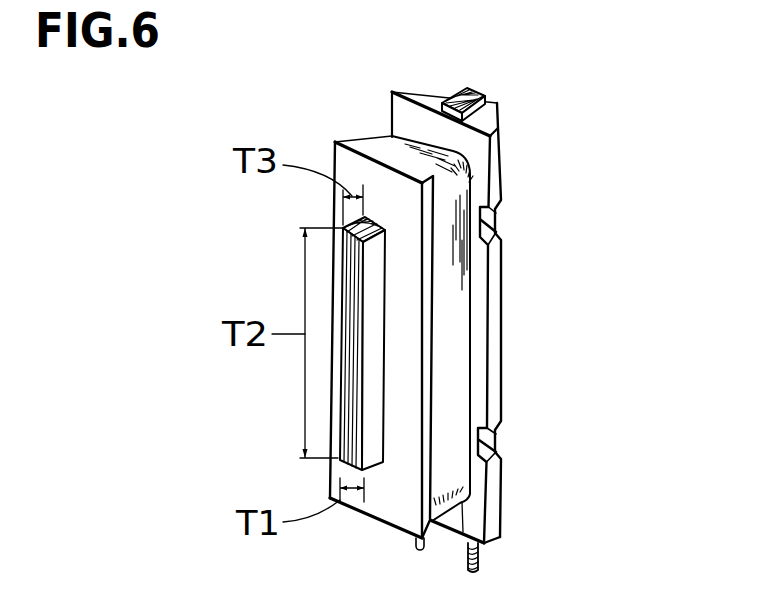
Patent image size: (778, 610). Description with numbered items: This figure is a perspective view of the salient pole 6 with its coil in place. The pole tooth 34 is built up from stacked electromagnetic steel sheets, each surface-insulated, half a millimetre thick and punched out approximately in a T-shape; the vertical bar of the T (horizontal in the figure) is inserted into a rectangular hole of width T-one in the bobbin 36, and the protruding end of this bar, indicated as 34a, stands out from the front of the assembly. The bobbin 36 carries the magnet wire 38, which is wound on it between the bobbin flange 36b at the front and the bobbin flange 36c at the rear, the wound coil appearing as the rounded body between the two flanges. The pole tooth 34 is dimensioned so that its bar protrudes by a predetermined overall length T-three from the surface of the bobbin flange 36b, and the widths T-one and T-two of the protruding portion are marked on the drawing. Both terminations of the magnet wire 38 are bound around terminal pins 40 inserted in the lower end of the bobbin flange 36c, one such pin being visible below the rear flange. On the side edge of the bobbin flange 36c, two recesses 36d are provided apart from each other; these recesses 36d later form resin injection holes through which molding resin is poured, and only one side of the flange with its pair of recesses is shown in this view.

The salient pole 6 is at (554, 159).
The pole tooth 34 is at (486, 92).
The front boss 34a is at (341, 397).
The bobbin 36 is at (509, 353).
The bobbin flange 36b is at (397, 513).
The bobbin flange 36c is at (484, 288).
The recess 36d is at (499, 213).
The magnet wire 38 is at (381, 141).
The terminal pin 40 is at (481, 562).